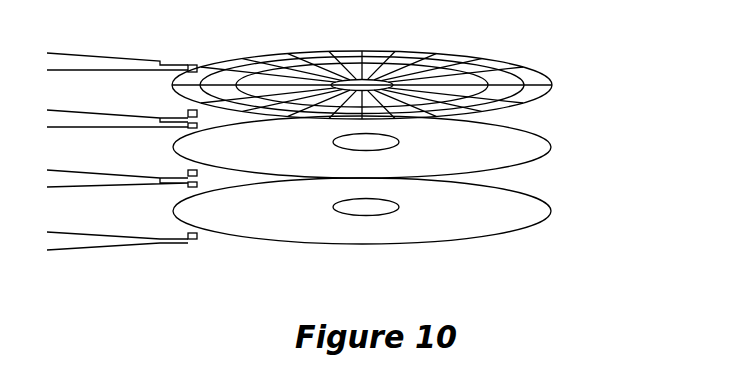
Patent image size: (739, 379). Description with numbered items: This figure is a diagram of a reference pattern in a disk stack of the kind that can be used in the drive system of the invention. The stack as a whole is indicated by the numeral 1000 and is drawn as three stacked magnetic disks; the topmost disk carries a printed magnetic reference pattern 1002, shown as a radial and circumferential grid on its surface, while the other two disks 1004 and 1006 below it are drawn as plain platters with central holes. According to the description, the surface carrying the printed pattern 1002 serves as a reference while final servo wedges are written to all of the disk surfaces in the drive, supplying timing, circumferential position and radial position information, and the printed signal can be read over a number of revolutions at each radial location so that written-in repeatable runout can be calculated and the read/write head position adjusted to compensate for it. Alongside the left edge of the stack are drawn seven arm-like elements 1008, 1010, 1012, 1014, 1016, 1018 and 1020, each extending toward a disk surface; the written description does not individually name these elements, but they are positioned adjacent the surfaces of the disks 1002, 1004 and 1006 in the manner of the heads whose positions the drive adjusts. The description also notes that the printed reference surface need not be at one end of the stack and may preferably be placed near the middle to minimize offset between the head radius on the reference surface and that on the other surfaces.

The disk assembly 1000 is at (562, 89).
The patterned top disk 1002 is at (480, 60).
The second disk 1004 is at (561, 155).
The third disk 1006 is at (561, 216).
The first probe 1008 is at (123, 55).
The second probe 1010 is at (173, 70).
The third probe 1012 is at (188, 110).
The fourth probe 1014 is at (180, 128).
The fifth probe 1016 is at (188, 170).
The sixth probe 1018 is at (188, 185).
The seventh probe 1020 is at (188, 235).